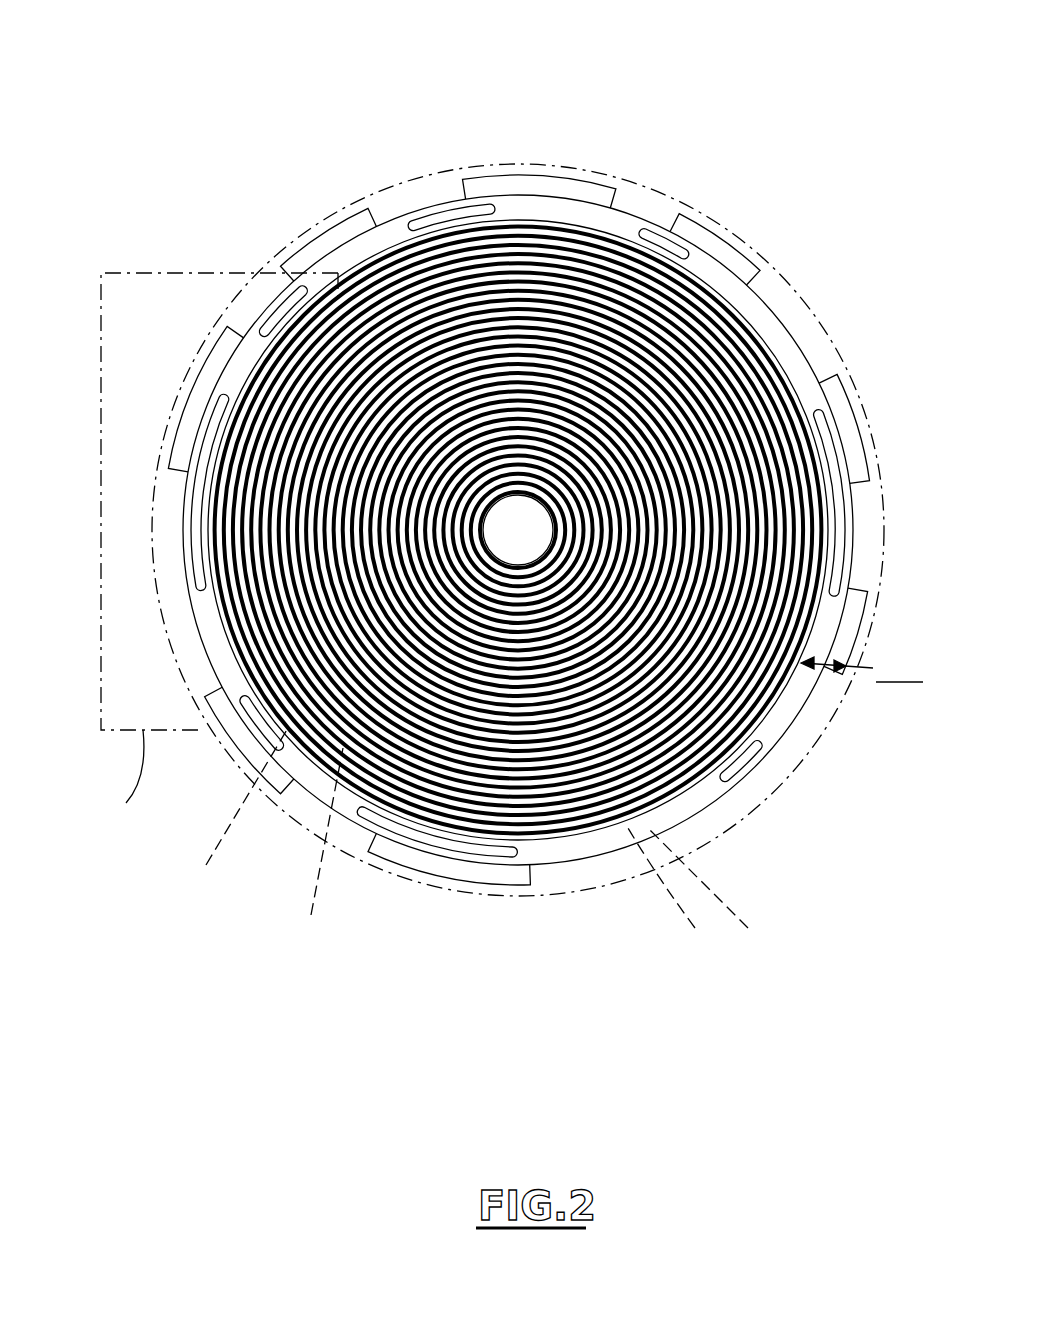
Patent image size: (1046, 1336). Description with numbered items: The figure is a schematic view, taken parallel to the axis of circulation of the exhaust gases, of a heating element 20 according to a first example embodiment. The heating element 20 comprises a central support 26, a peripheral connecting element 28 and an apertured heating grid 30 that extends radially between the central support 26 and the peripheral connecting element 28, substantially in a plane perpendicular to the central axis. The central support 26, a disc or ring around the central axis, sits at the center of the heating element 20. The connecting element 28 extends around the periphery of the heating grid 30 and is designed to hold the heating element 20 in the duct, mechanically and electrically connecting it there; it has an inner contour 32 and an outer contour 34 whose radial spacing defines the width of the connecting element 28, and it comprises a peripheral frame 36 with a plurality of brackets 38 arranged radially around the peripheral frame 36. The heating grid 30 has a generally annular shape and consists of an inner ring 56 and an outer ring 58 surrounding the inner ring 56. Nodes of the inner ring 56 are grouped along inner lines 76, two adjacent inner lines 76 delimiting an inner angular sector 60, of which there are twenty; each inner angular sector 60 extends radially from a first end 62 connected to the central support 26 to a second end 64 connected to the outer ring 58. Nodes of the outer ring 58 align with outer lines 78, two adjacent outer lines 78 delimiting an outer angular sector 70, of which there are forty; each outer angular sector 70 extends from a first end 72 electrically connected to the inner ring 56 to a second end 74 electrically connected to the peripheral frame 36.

The heating element 20 is at (172, 840).
The central support 26 is at (518, 501).
The peripheral connecting element 28 is at (133, 412).
The apertured heating grid 30 is at (282, 578).
The inner contour 32 is at (527, 250).
The outer contour 34 is at (413, 155).
The peripheral frame 36 is at (487, 208).
The brackets 38 is at (717, 290).
The inner ring 56 is at (355, 270).
The outer ring 58 is at (215, 398).
The inner angular sector 60 is at (738, 362).
The first end 62 is at (537, 550).
The second end 64 is at (790, 300).
The outer angular sector 70 is at (640, 253).
The first end 72 is at (710, 237).
The second end 74 is at (600, 300).
The inner lines 76 is at (320, 848).
The outer lines 78 is at (637, 810).